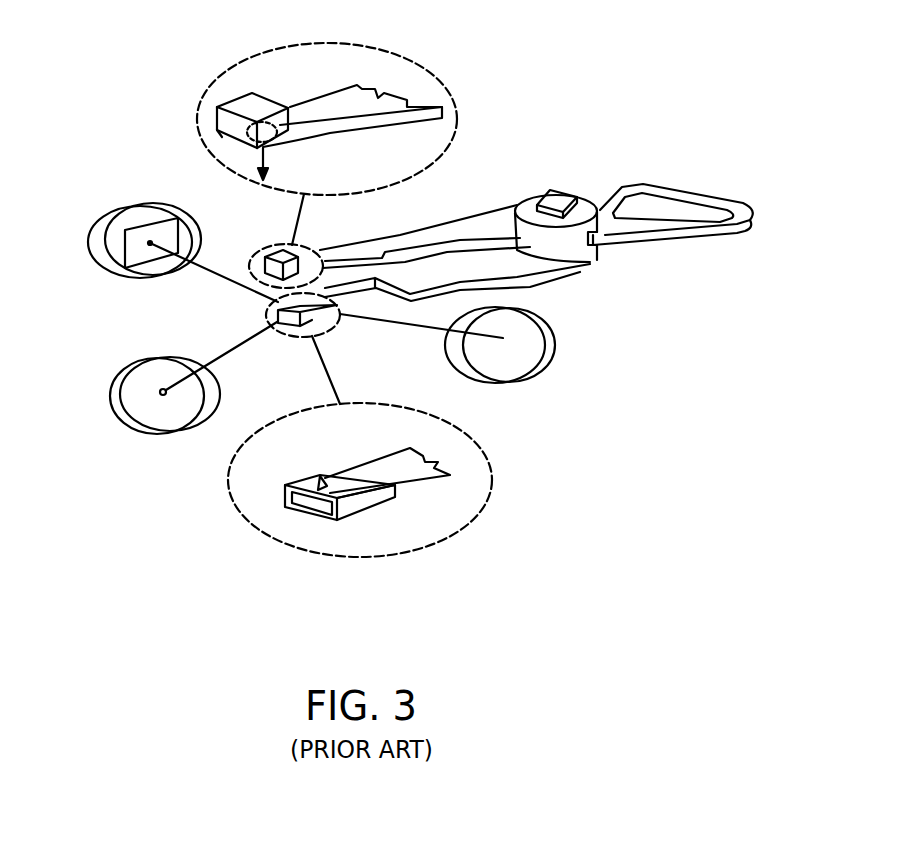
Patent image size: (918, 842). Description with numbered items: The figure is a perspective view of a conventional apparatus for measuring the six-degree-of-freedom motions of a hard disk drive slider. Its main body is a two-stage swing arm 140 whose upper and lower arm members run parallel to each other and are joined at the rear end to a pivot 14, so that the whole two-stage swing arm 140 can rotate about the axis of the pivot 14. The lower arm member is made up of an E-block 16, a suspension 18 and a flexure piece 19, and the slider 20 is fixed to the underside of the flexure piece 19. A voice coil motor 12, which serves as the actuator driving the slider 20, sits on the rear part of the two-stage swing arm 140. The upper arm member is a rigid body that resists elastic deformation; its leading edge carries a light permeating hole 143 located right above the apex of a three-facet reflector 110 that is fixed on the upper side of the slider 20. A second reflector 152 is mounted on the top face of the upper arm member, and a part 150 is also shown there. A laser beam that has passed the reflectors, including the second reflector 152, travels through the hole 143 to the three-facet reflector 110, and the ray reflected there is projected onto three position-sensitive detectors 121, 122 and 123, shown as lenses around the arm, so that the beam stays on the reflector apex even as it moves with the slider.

The voice coil motor 12 is at (670, 184).
The pivot 14 is at (590, 262).
The E-block 16 is at (513, 270).
The suspension 18 is at (437, 470).
The flexure piece 19 is at (367, 497).
The slider 20 is at (343, 515).
The three-facet reflector 110 is at (318, 488).
The position-sensitive detector 121 is at (128, 418).
The position-sensitive detector 122 is at (544, 357).
The position-sensitive detector 123 is at (92, 242).
The two-stage swing arm 140 is at (377, 98).
The light permeating hole 143 is at (230, 134).
The thumb pad 150 is at (560, 192).
The second reflector 152 is at (270, 260).